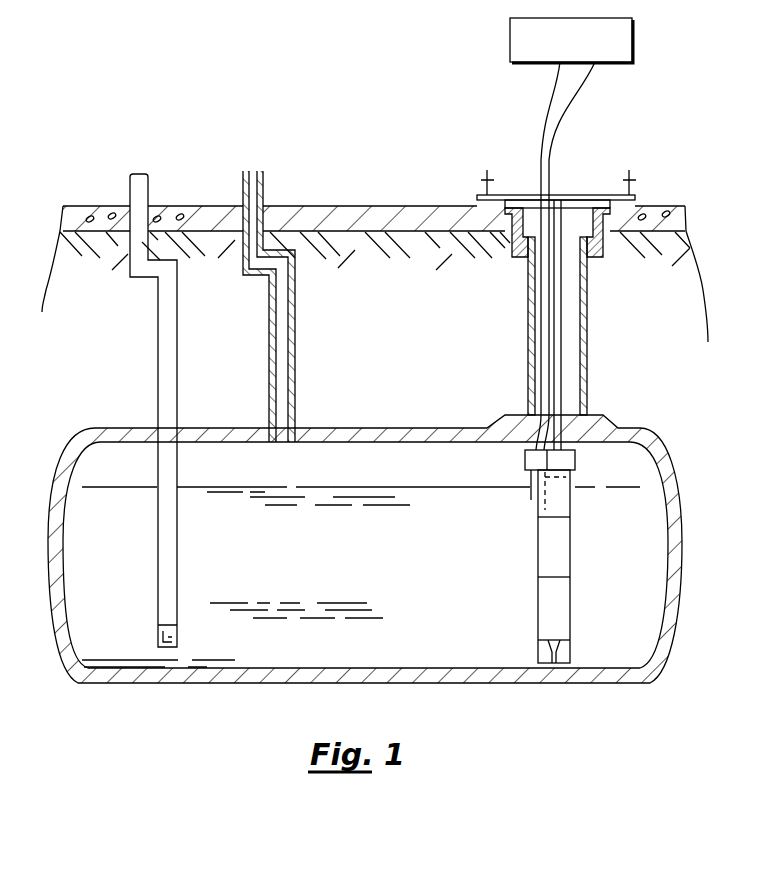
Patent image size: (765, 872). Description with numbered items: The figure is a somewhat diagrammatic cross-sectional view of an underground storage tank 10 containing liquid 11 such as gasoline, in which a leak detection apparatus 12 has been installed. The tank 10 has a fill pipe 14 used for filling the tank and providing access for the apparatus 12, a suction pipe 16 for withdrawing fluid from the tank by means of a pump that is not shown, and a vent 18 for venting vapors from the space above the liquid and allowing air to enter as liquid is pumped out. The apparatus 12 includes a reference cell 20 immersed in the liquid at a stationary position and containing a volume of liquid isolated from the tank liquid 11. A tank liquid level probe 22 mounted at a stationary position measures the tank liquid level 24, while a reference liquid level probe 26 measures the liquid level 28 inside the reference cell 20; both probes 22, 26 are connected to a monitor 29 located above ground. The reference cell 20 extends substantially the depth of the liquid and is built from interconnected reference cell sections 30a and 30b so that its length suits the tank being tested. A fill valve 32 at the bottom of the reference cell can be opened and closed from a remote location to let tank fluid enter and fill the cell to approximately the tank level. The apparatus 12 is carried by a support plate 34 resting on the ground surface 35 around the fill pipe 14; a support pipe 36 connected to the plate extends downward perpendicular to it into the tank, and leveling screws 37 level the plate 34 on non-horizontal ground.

The underground storage tank 10 is at (376, 419).
The liquid 11 is at (410, 613).
The leak detection apparatus 12 is at (560, 193).
The fill pipe 14 is at (528, 356).
The suction pipe 16 is at (178, 357).
The vent 18 is at (296, 357).
The reference cell 20 is at (562, 566).
The tank liquid level probe 22 is at (530, 492).
The tank liquid level 24 is at (253, 492).
The reference liquid level probe 26 is at (576, 474).
The liquid level in reference cell 28 is at (562, 494).
The monitor 29 is at (634, 43).
The reference cell section 30a is at (537, 507).
The reference cell section 30b is at (571, 595).
The fill valve 32 is at (549, 648).
The support plate 34 is at (524, 194).
The ground surface 35 is at (430, 205).
The support pipe 36 is at (558, 366).
The leveling screws 37 is at (637, 180).